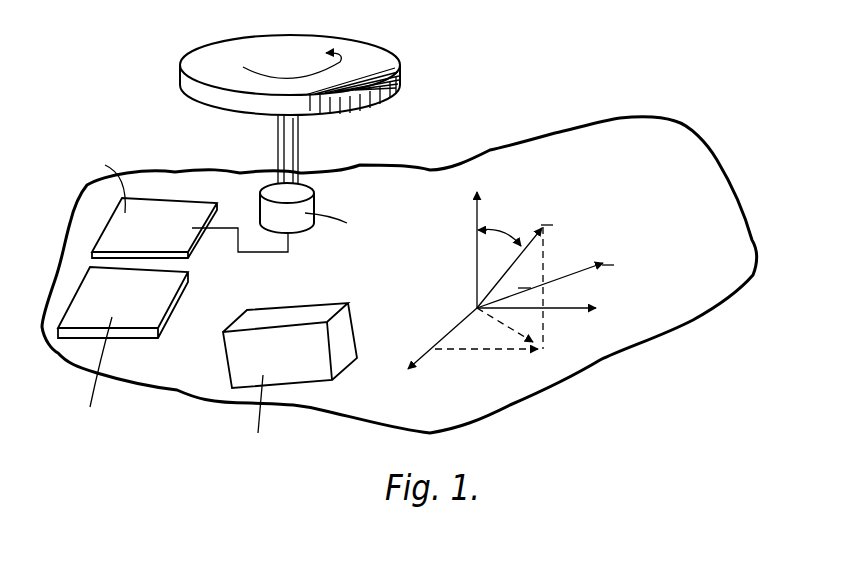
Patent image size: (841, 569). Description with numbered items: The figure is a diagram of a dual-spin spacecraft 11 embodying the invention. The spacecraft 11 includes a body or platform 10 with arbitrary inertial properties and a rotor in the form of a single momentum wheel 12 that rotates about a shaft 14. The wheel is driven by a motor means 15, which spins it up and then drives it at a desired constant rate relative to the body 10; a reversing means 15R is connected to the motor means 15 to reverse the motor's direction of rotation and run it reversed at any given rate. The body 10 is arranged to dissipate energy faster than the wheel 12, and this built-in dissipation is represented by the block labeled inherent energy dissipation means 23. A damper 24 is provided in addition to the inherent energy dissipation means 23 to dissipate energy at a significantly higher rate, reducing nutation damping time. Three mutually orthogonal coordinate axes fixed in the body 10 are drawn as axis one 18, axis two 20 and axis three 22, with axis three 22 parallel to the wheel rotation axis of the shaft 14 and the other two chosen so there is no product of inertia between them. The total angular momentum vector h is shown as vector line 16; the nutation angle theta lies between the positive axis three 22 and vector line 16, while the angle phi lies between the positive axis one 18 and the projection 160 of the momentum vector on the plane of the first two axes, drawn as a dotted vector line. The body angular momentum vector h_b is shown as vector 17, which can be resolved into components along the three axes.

The body 10 is at (655, 147).
The spacecraft 11 is at (566, 77).
The momentum wheel 12 is at (380, 57).
The shaft 14 is at (278, 146).
The motor means 15 is at (310, 205).
The reversing means 15R is at (172, 208).
The angular momentum vector line 16 is at (531, 243).
The vector h_b 17 is at (570, 270).
The axis 1 18 is at (423, 353).
The axis 2 20 is at (567, 307).
The axis 3 22 is at (477, 218).
The inherent energy dissipation means 23 is at (137, 337).
The damper 24 is at (312, 362).
The projection of the momentum vector 160 is at (520, 333).